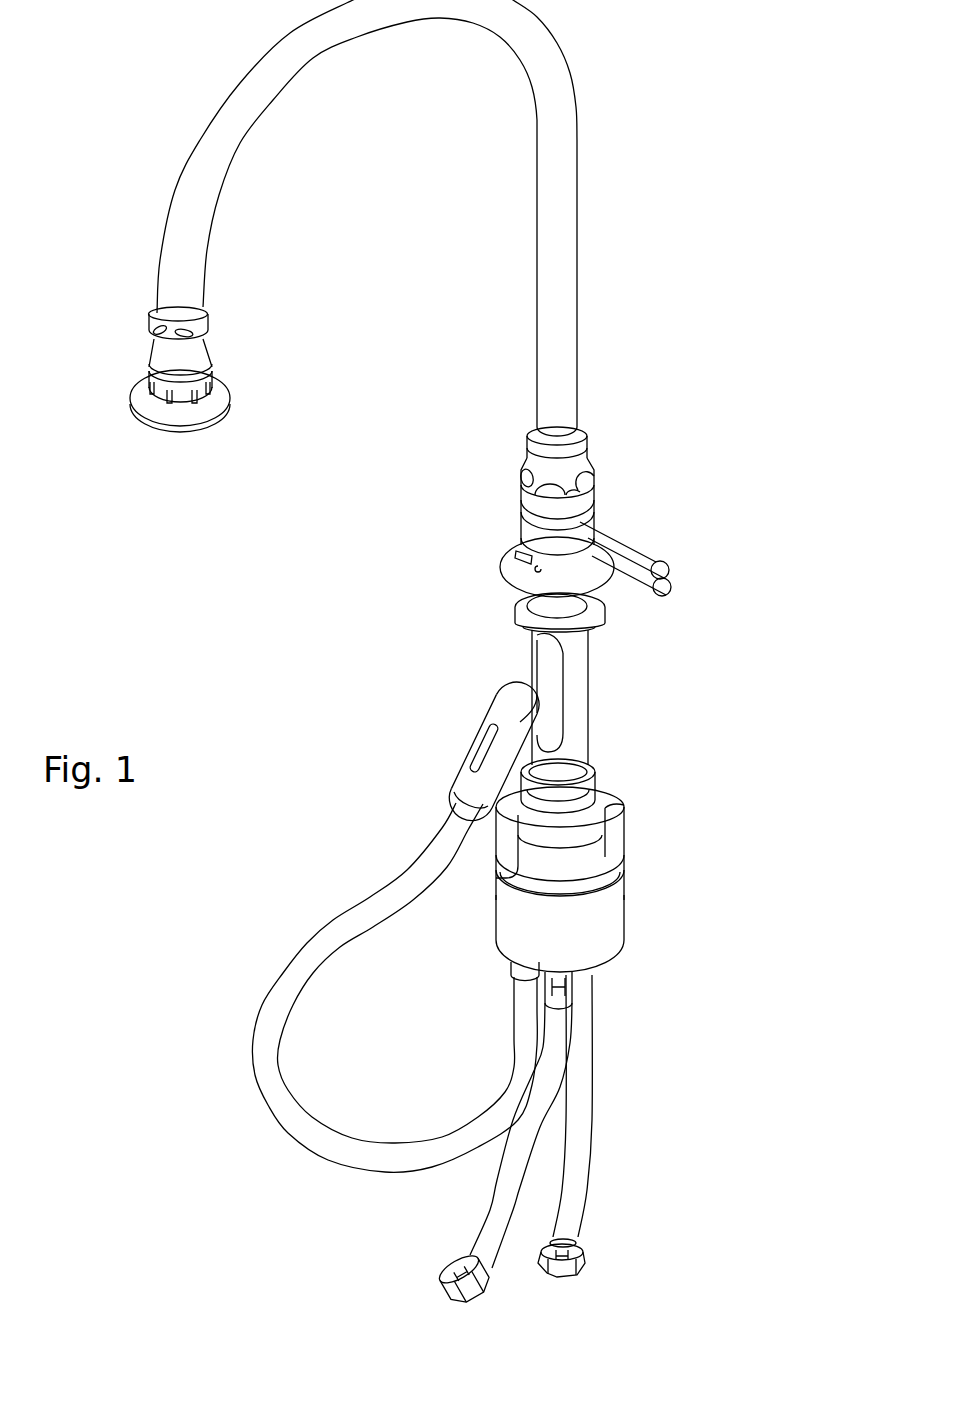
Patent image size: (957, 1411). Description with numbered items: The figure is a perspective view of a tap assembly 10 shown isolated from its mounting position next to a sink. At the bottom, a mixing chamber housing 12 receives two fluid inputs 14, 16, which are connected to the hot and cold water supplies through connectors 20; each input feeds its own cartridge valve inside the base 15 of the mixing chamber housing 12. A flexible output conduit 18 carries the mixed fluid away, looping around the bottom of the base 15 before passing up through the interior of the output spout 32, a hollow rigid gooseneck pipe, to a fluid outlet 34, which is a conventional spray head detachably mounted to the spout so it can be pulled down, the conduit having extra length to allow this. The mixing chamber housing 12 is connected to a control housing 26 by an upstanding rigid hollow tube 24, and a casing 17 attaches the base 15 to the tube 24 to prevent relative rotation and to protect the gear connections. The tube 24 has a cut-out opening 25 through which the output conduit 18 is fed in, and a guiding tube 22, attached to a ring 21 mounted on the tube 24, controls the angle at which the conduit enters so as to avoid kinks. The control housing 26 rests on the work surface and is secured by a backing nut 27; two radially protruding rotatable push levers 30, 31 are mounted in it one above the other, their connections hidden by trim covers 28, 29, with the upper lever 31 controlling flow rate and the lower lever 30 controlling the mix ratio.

The tap assembly 10 is at (709, 326).
The mixing chamber housing 12 is at (627, 857).
The fluid input 14 is at (593, 1145).
The base 15 is at (608, 938).
The fluid input 16 is at (490, 1202).
The casing 17 is at (620, 807).
The output conduit 18 is at (273, 1090).
The connectors 20 is at (443, 1268).
The ring 21 is at (588, 780).
The guiding tube 22 is at (465, 783).
The upstanding rigid tube 24 is at (580, 710).
The cut-out opening 25 is at (530, 660).
The control housing 26 is at (515, 573).
The backing nut 27 is at (522, 610).
The trim cover 28 is at (517, 535).
The trim cover 29 is at (527, 517).
The lower push lever 30 is at (657, 585).
The upper push lever 31 is at (652, 557).
The output spout 32 is at (568, 199).
The fluid outlet 34 is at (210, 362).